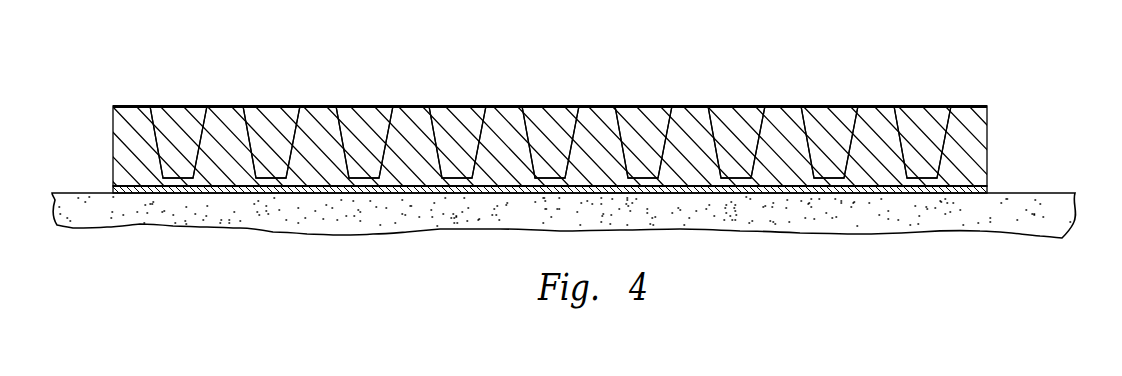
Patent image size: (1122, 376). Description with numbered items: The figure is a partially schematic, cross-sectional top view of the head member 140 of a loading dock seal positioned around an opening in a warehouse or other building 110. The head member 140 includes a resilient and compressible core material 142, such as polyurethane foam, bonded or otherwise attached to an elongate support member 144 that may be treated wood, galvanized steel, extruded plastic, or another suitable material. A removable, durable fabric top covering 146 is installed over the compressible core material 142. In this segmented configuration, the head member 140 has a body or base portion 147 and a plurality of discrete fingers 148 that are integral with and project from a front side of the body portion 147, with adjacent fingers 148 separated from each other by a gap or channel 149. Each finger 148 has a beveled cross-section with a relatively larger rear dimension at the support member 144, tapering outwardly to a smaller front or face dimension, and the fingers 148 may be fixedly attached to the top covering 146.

The building 110 is at (1063, 213).
The head member 140 is at (990, 113).
The core material 142 is at (882, 140).
The support member 144 is at (990, 189).
The top covering 146 is at (848, 106).
The body portion 147 is at (417, 178).
The fingers 148 is at (507, 127).
The channel 149 is at (645, 134).